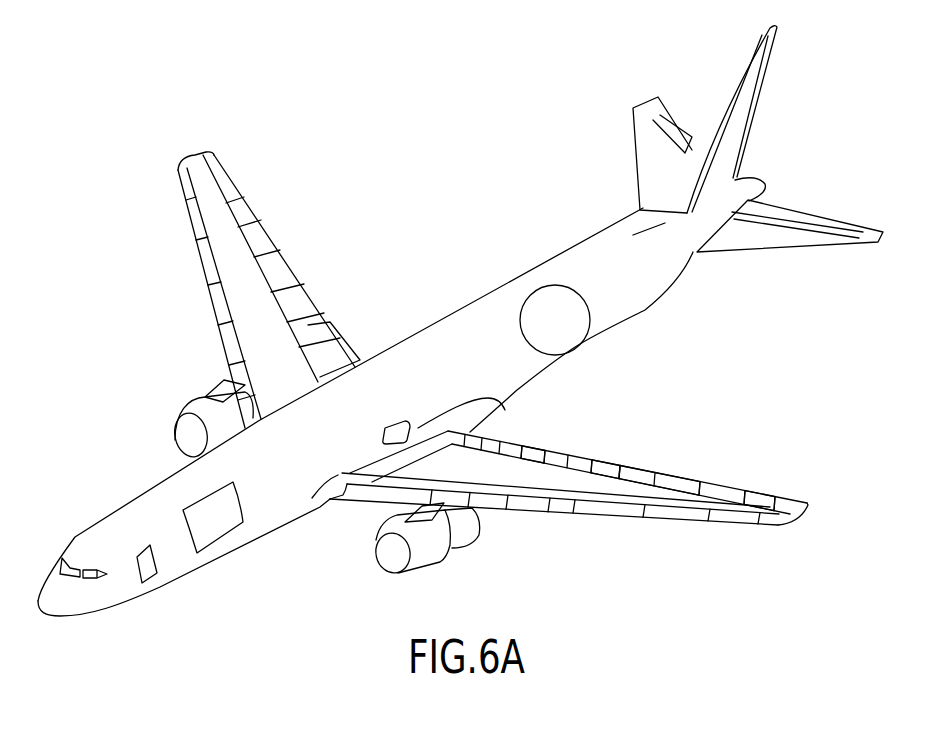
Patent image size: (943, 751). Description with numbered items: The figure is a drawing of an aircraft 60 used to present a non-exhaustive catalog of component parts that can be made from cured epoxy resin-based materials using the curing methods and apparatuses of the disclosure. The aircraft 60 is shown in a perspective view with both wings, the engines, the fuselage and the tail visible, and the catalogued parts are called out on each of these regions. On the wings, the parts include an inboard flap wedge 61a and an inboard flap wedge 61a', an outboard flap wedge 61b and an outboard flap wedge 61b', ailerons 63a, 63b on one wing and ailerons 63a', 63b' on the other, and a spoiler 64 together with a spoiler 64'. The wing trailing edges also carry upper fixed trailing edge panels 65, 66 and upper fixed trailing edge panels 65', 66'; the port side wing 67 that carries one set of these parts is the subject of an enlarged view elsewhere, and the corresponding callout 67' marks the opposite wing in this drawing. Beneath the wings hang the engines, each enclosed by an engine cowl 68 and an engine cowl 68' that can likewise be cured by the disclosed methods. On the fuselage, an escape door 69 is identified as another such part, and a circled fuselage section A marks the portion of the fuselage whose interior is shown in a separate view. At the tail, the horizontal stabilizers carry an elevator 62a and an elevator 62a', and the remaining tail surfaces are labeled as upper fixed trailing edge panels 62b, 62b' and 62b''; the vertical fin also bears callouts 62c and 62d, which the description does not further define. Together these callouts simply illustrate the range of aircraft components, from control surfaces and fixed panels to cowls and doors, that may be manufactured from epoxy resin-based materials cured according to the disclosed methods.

The aircraft 60 is at (436, 193).
The fuselage section A is at (580, 345).
The inboard flap wedge 61a is at (578, 462).
The outboard flap wedge 61b is at (673, 474).
The aileron 63a is at (562, 448).
The aileron 63b is at (788, 495).
The spoiler 64 is at (615, 456).
The upper fixed trailing edge panel 65 is at (556, 509).
The upper fixed trailing edge panel 66 is at (554, 516).
The port side wing 67 is at (497, 509).
The engine cowl 68 is at (406, 539).
The escape door 69 is at (388, 438).
The inboard flap wedge 61a' is at (346, 346).
The outboard flap wedge 61b' is at (275, 231).
The aileron 63a' is at (326, 311).
The aileron 63b' is at (266, 267).
The spoiler 64' is at (304, 271).
The upper fixed trailing edge panel 65' is at (205, 261).
The upper fixed trailing edge panel 66' is at (217, 298).
The direction indicator (left wing) 67' is at (223, 354).
The engine cowl 68' is at (196, 421).
The elevator 62a is at (790, 215).
The upper fixed trailing edge panel 62b is at (738, 123).
The upper fixed trailing edge panel 62b' is at (797, 247).
The elevator 62a' is at (670, 148).
The upper fixed trailing edge panel 62b'' is at (638, 137).
The rudder 62c is at (753, 83).
The vertical stabilizer 62d is at (727, 90).